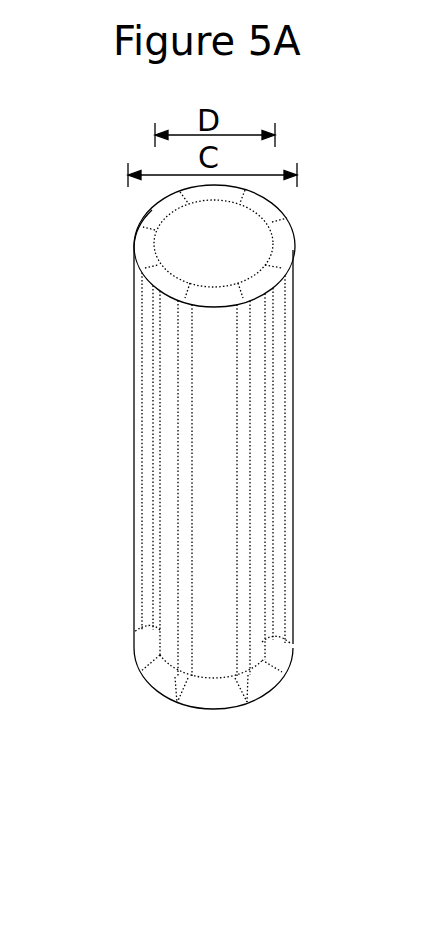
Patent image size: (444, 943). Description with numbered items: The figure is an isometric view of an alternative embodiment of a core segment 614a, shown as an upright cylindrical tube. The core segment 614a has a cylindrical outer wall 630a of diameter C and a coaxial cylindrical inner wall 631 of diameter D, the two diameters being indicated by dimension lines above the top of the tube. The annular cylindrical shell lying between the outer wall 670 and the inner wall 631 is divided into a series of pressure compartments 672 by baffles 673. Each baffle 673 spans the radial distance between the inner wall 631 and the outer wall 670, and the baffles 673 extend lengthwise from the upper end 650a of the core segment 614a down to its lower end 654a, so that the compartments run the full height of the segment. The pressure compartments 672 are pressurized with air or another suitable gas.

The core segment 614a is at (233, 502).
The cylindrical outer wall 630a is at (135, 373).
The inner wall 631 is at (101, 219).
The upper end 650a is at (236, 281).
The lower end 654a is at (125, 625).
The outer wall 670 is at (267, 297).
The pressure compartments 672 is at (285, 255).
The baffles 673 is at (195, 294).